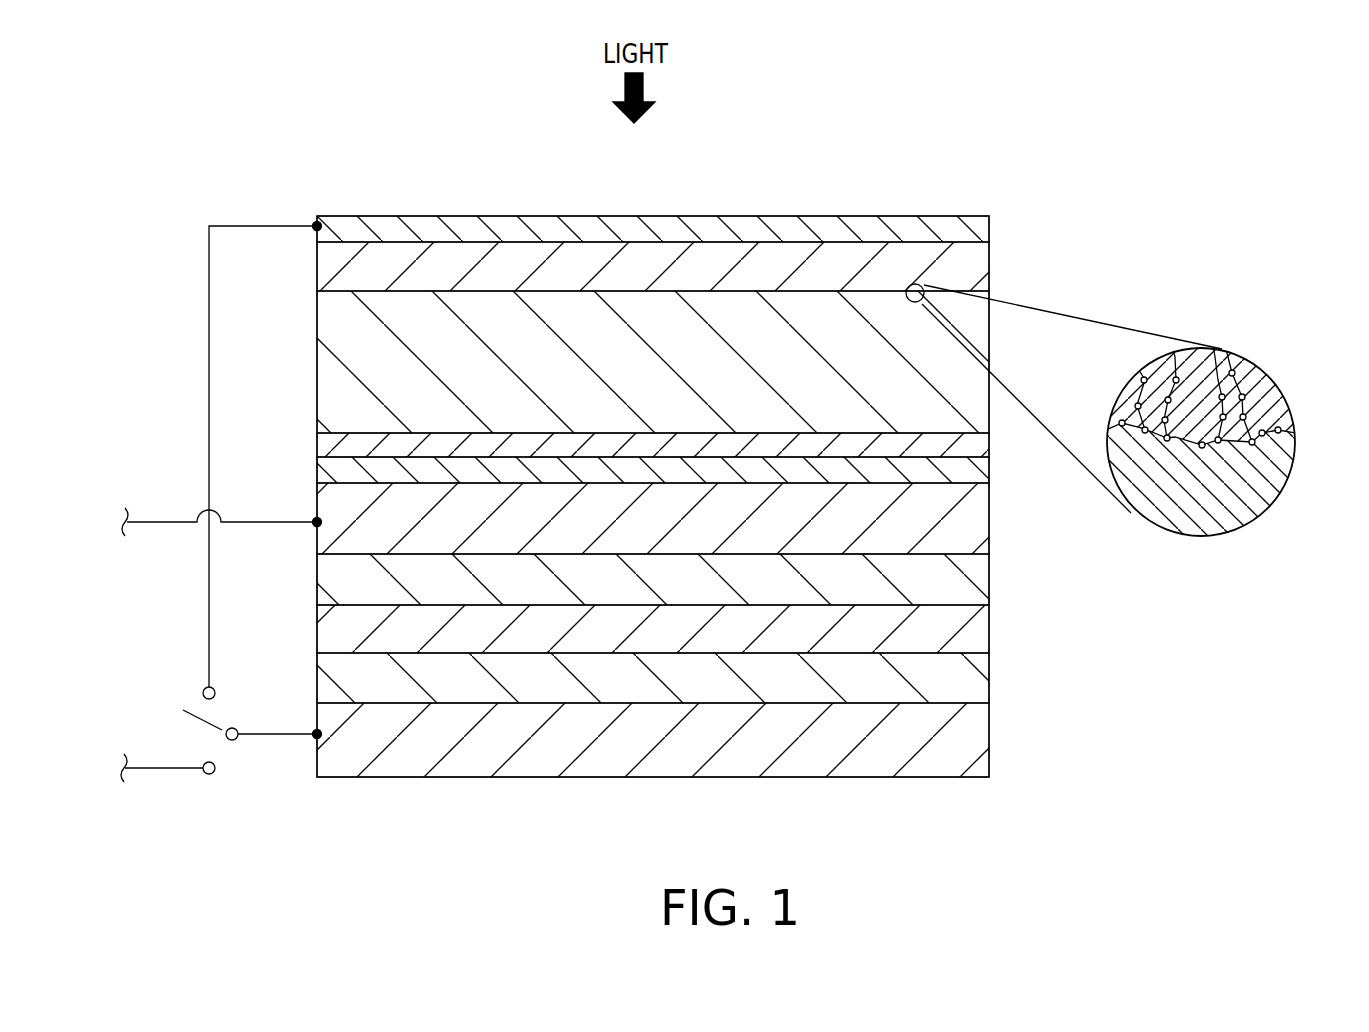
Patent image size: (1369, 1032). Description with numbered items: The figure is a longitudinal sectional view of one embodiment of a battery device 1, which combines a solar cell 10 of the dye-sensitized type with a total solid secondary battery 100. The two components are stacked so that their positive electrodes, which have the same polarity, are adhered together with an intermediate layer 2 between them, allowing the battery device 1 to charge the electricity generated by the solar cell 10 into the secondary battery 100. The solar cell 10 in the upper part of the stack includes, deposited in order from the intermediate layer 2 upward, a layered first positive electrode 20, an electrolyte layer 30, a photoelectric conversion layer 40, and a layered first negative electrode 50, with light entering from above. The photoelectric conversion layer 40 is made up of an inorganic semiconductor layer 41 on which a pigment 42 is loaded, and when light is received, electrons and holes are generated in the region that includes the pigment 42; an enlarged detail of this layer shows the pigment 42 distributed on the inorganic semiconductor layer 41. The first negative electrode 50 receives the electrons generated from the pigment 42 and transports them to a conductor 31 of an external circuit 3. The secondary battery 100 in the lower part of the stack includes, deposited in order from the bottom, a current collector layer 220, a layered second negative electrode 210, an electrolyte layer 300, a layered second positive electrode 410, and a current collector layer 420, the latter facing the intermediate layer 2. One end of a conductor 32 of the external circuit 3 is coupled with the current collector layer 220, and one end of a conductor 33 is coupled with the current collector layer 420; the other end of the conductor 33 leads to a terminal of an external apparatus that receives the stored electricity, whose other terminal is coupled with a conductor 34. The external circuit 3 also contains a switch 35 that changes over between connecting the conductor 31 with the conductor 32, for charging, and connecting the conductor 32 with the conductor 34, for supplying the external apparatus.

The battery device 1 is at (1136, 110).
The intermediate layer 2 is at (975, 470).
The external circuit 3 is at (186, 196).
The solar cell 10 is at (1060, 294).
The first positive electrode 20 is at (975, 443).
The electrolyte layer 30 is at (975, 340).
The conductor 31 is at (212, 341).
The conductor 32 is at (265, 738).
The conductor 33 is at (258, 521).
The conductor 34 is at (166, 770).
The switch 35 is at (220, 711).
The photoelectric conversion layer 40 is at (975, 272).
The inorganic semiconductor layer 41 is at (1281, 398).
The pigment 42 is at (1245, 350).
The first negative electrode 50 is at (975, 231).
The secondary battery 100 is at (1060, 651).
The second negative electrode 210 is at (975, 675).
The current collector layer 220 is at (975, 745).
The electrolyte layer 300 is at (975, 622).
The second positive electrode 410 is at (975, 583).
The current collector layer 420 is at (975, 522).